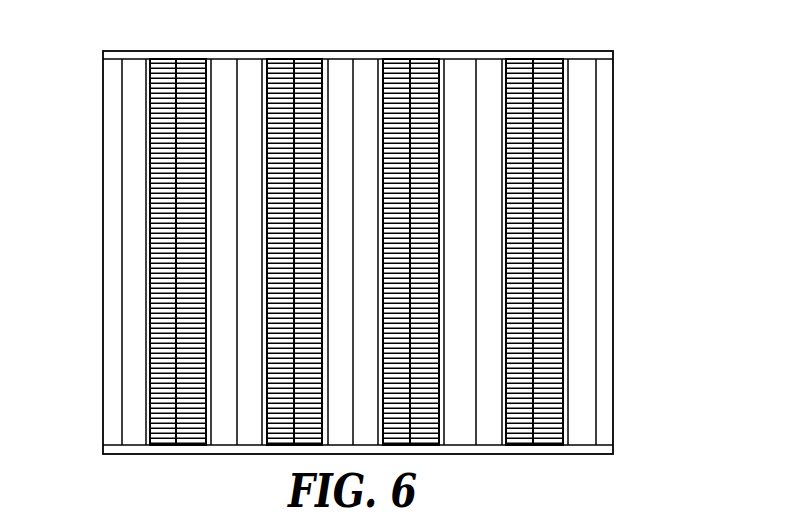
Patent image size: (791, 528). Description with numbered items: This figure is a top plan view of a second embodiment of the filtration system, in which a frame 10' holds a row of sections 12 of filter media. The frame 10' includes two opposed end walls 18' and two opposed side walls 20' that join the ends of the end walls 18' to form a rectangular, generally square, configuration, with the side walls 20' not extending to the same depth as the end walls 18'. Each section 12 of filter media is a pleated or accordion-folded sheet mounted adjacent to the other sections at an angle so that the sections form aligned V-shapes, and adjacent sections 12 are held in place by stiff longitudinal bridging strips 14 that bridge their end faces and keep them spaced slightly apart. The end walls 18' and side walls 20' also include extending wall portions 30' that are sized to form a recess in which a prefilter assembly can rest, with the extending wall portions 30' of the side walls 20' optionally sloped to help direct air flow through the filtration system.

The frame 10' is at (416, 252).
The sections of filter media 12 is at (425, 342).
The bridging strips 14 is at (365, 68).
The end walls 18' is at (354, 257).
The side walls 20' is at (366, 252).
The extending wall portions 30' is at (366, 252).